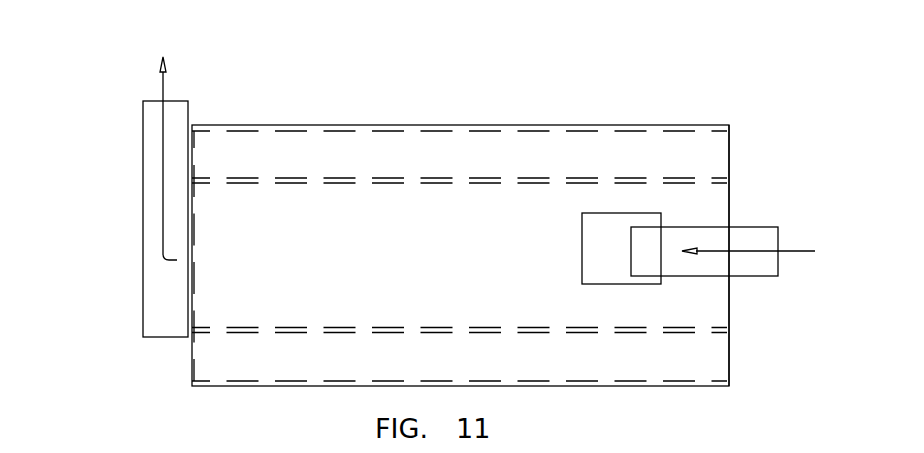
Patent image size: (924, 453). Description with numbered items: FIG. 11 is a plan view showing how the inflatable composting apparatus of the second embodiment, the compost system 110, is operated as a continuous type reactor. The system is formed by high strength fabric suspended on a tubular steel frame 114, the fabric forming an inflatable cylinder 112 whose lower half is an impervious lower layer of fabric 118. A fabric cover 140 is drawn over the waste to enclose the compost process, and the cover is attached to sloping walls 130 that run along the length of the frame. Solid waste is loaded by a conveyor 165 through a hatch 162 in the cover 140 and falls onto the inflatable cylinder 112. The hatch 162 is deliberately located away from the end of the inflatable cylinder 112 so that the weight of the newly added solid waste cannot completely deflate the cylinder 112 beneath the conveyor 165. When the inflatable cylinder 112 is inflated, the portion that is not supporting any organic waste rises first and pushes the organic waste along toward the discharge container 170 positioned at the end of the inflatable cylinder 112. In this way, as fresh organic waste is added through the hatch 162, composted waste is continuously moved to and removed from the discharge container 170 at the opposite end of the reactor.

The compost system 110 is at (553, 120).
The inflatable cylinder 112 is at (277, 305).
The tubular steel frame 114 is at (729, 182).
The lower layer of fabric 118 is at (480, 329).
The sloping walls 130 is at (403, 148).
The fabric cover 140 is at (315, 123).
The hatch 162 is at (582, 282).
The conveyor 165 is at (768, 224).
The discharge container 170 is at (143, 127).